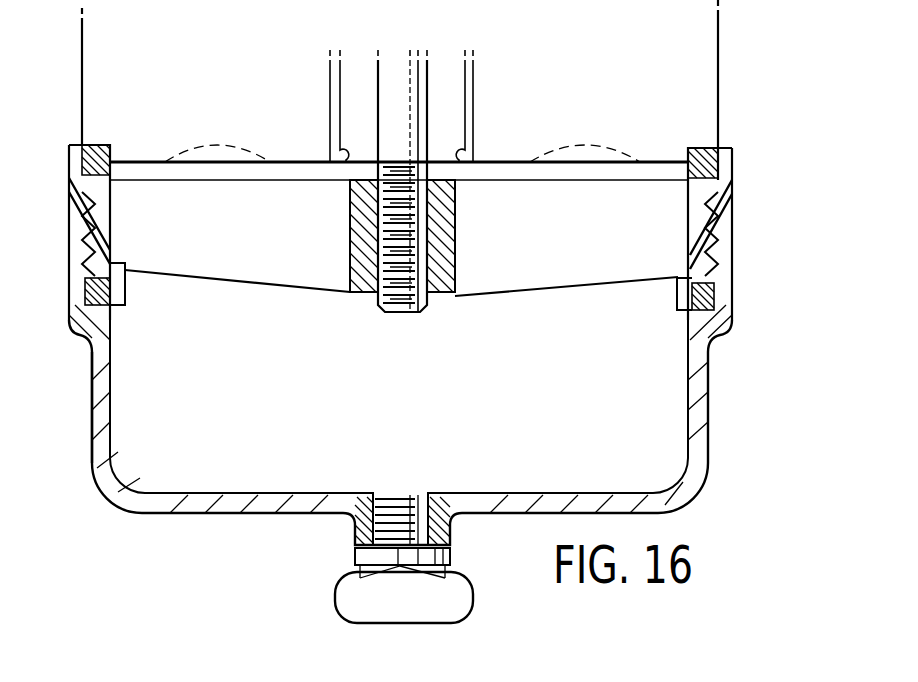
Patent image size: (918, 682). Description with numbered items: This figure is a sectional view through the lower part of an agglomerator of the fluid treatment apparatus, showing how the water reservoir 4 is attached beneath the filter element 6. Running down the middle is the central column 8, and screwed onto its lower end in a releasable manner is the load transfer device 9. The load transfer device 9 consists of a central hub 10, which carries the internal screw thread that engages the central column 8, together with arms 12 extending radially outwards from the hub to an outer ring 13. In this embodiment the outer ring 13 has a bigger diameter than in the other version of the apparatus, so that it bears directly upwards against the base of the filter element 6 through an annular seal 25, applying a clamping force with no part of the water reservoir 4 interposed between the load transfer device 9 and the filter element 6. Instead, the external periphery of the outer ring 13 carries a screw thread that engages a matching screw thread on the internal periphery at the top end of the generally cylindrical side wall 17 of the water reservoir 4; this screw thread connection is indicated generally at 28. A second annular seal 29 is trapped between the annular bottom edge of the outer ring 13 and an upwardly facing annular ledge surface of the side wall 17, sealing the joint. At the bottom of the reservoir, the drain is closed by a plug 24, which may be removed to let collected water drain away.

The water reservoir 4 is at (712, 405).
The filter element 6 is at (718, 60).
The central column 8 is at (415, 90).
The load transfer device 9 is at (537, 296).
The central hub 10 is at (450, 295).
The arms 12 is at (273, 272).
The outer ring 13 is at (680, 285).
The side wall 17 is at (112, 414).
The plug 24 is at (350, 585).
The annular seal 25 is at (712, 150).
The screw thread connection 28 is at (74, 190).
The annular seal 29 is at (700, 290).